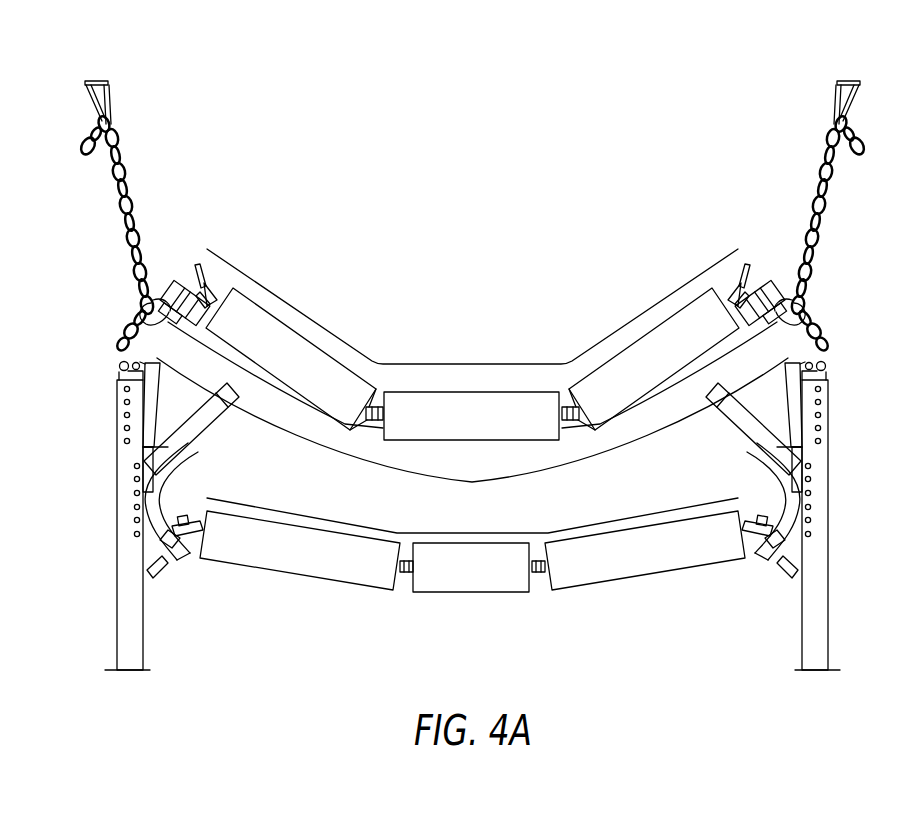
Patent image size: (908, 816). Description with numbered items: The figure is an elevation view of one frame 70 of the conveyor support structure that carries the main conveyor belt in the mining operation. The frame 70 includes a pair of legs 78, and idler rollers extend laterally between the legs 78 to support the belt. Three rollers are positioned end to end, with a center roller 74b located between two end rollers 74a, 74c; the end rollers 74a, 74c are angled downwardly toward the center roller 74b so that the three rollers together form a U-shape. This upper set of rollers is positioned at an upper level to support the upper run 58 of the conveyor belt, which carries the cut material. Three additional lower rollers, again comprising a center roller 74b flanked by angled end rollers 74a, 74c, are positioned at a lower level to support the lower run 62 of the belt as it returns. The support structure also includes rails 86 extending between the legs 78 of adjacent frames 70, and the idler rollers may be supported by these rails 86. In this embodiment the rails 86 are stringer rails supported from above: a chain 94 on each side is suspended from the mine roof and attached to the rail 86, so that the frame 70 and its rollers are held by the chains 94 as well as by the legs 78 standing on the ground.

The frame 70 is at (689, 106).
The chain 94 is at (114, 170).
The rail 86 is at (172, 296).
The leg 78 is at (136, 631).
The upper run 58 is at (592, 345).
The end roller 74a is at (320, 391).
The center roller 74b is at (482, 418).
The end roller 74c is at (612, 398).
The lower run 62 is at (514, 531).